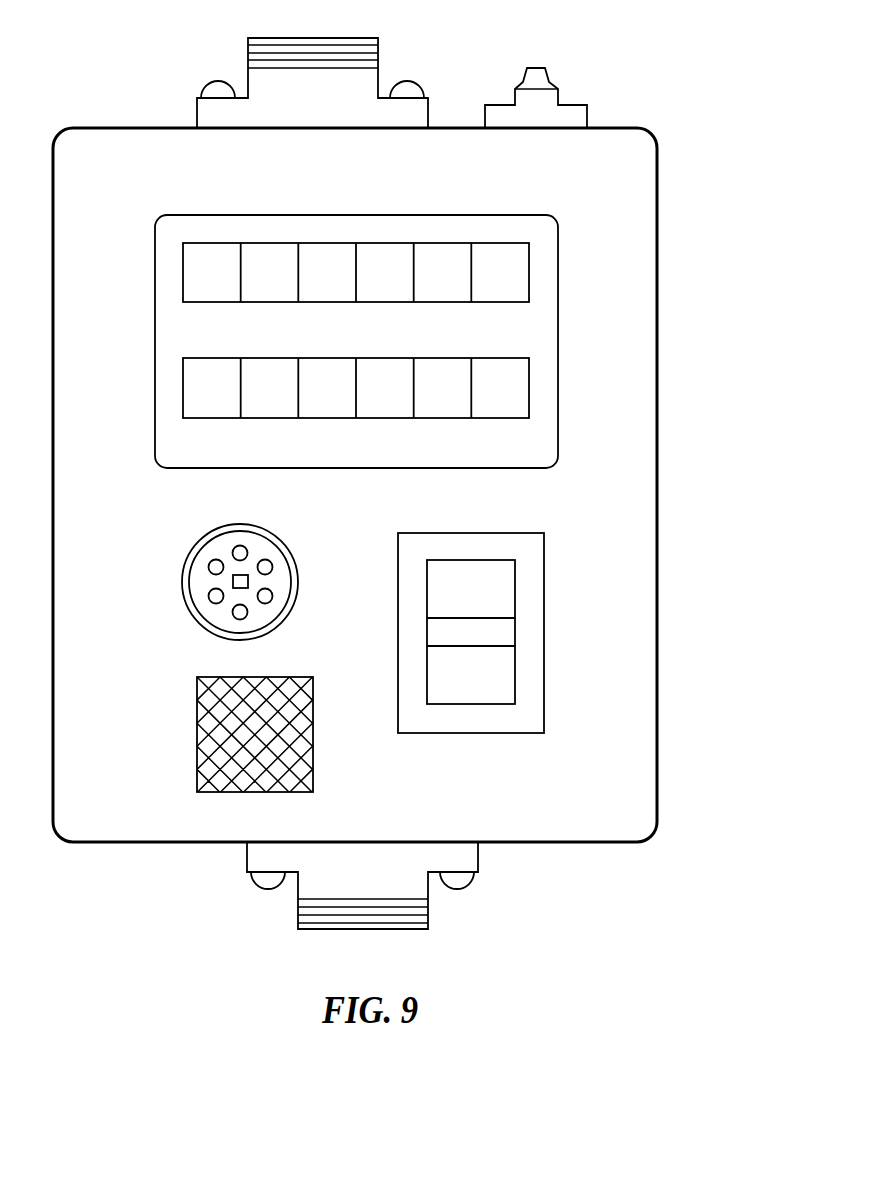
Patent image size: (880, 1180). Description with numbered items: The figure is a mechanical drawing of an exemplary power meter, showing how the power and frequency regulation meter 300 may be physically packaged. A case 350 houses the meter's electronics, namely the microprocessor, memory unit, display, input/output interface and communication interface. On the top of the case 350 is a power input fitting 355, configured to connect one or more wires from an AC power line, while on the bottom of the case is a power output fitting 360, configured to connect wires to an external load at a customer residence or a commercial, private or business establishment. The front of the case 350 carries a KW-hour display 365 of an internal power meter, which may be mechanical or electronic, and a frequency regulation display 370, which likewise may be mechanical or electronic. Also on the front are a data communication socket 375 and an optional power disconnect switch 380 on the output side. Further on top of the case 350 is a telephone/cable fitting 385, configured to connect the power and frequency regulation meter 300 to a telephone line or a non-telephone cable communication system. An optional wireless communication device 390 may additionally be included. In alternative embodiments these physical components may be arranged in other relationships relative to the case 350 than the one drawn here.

The power and frequency regulation meter 300 is at (647, 72).
The case 350 is at (137, 809).
The power input fitting 355 is at (337, 107).
The power output fitting 360 is at (375, 889).
The KW-hour display 365 is at (183, 272).
The frequency regulation display 370 is at (183, 385).
The data communication socket 375 is at (183, 578).
The power disconnect switch 380 is at (545, 638).
The telephone/cable fitting 385 is at (528, 112).
The wireless communication device 390 is at (197, 700).